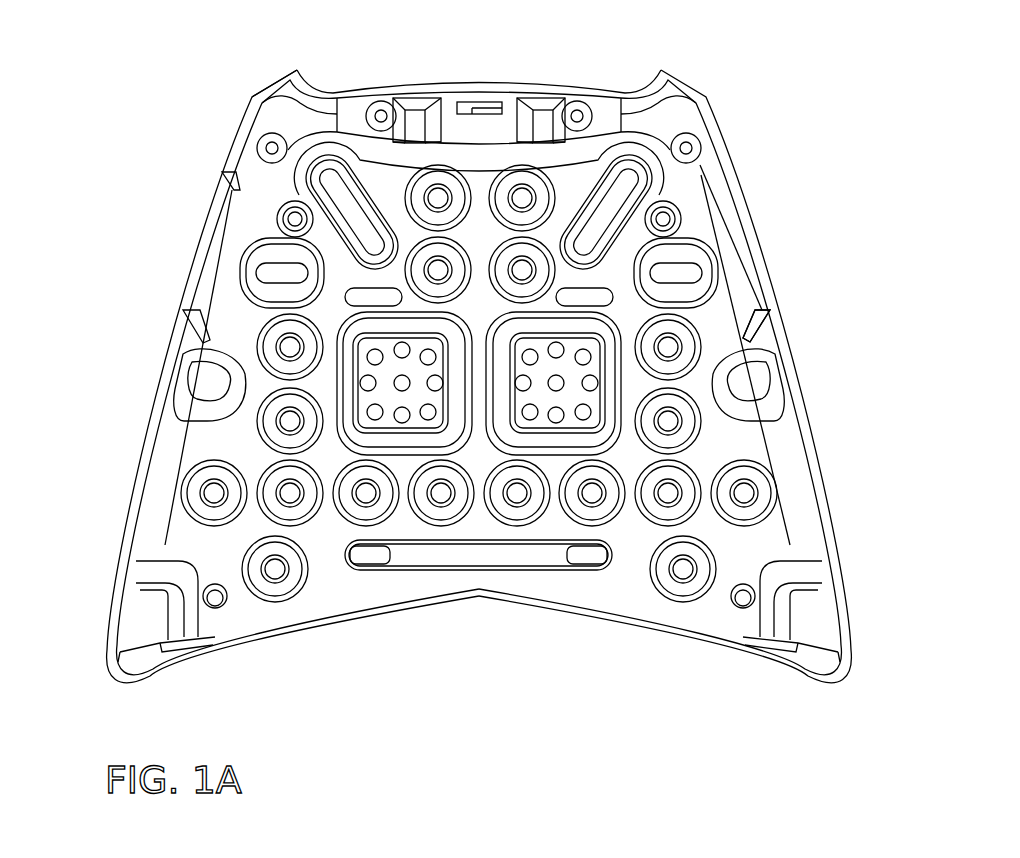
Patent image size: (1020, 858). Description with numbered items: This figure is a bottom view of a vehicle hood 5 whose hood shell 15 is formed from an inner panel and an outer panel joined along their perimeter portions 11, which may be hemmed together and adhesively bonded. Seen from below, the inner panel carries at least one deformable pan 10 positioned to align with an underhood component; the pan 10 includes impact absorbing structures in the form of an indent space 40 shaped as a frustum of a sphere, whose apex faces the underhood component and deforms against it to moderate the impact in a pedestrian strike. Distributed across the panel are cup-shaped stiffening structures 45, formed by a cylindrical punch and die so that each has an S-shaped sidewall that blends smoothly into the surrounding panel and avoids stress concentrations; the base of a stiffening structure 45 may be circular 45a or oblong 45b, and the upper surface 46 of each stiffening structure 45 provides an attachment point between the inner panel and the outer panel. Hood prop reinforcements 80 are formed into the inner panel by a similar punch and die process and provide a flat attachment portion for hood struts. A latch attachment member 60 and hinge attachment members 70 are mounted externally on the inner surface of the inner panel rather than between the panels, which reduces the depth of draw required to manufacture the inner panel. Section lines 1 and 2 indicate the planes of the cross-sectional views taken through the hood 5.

The vehicle hood 5 is at (750, 80).
The deformable pan 10 is at (285, 417).
The perimeter portions 11 is at (350, 92).
The hood shell 15 is at (246, 97).
The indent space 40 is at (373, 357).
The stiffening structure 45 is at (183, 378).
The circular base 45a is at (698, 333).
The oblong base 45b is at (330, 218).
The upper surface 46 is at (780, 328).
The latch attachment member 60 is at (612, 104).
The hinge attachment member 70 is at (155, 626).
The hood prop reinforcement 80 is at (678, 220).
The section line 1 is at (480, 85).
The section line 2 is at (563, 85).